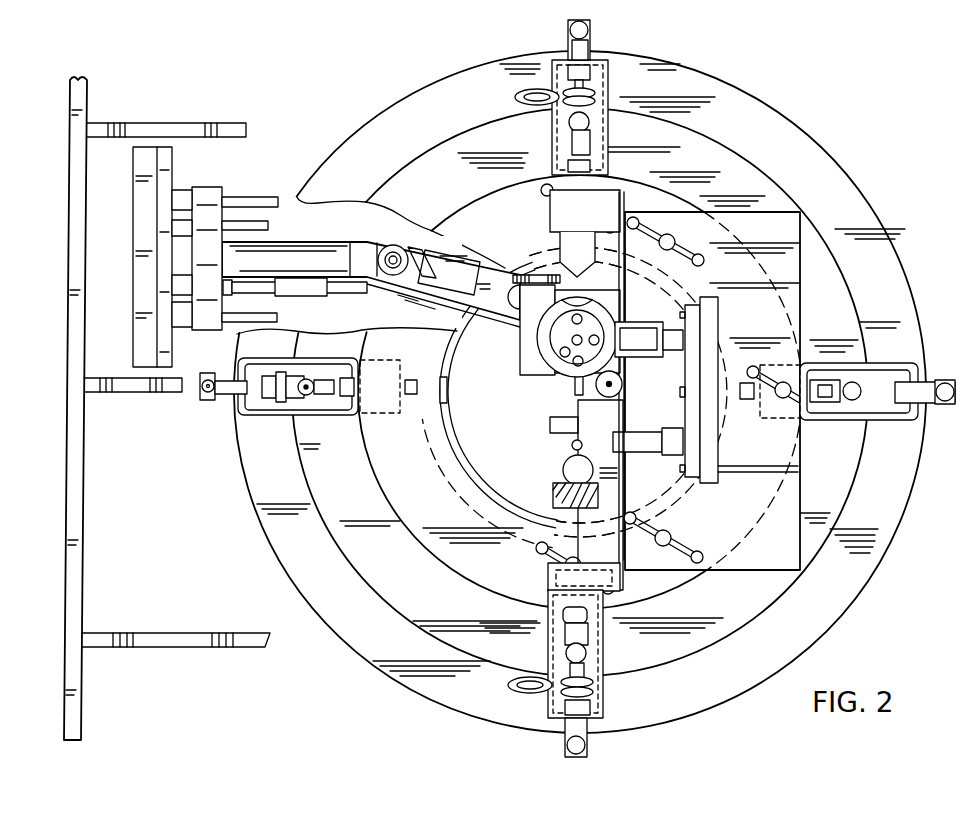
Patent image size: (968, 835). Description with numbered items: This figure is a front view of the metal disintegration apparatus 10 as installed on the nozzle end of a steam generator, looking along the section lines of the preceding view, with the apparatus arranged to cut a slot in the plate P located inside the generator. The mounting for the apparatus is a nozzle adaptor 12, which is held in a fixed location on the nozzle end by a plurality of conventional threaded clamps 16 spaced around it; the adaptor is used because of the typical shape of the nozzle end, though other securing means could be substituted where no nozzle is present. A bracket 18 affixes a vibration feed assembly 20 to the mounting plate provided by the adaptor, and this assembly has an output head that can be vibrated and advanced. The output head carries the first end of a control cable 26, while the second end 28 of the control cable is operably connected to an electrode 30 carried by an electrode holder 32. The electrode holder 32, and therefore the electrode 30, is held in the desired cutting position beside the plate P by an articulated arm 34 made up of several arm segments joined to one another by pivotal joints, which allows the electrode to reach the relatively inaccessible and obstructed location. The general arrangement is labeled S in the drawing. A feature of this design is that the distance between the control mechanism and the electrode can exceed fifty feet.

The metal disintegration apparatus 10 is at (517, 373).
The nozzle adaptor 12 is at (447, 534).
The threaded clamps 16 is at (608, 78).
The bracket 18 is at (712, 368).
The vibration feed assembly 20 is at (620, 366).
The control cable 26 is at (363, 289).
The second end of control cable 28 is at (247, 287).
The electrode 30 is at (147, 150).
The electrode holder 32 is at (207, 197).
The articulated arm 34 is at (348, 230).
The plate P is at (76, 232).
The support assembly S is at (352, 660).